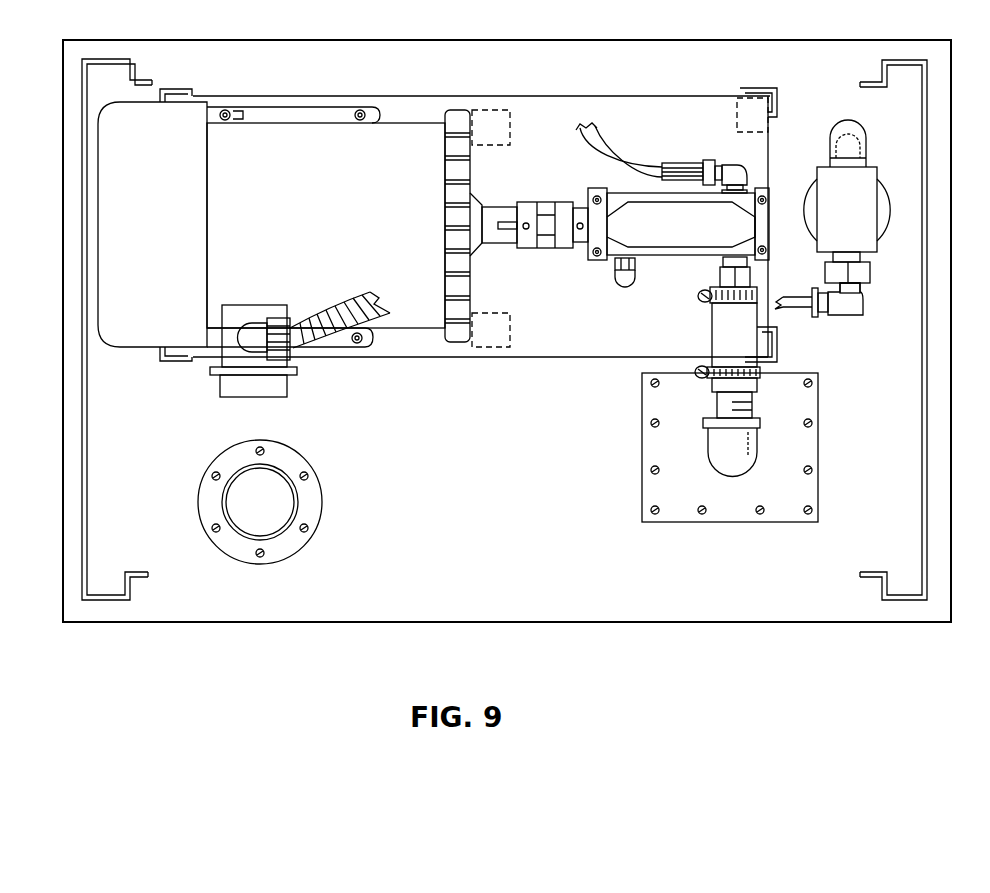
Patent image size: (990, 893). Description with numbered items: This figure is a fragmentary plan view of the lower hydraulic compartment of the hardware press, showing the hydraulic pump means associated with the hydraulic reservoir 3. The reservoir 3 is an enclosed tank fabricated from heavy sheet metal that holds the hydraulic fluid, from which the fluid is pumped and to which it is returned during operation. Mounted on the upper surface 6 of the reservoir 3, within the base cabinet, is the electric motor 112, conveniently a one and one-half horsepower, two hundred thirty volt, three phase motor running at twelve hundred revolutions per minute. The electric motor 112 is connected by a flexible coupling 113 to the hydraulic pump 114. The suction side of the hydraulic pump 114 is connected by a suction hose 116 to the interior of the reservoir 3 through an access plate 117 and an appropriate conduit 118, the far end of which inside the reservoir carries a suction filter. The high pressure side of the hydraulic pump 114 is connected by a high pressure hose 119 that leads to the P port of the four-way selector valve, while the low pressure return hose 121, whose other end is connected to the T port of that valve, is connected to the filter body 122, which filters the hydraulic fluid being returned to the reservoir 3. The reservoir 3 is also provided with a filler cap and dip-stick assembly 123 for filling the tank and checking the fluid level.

The reservoir 3 is at (273, 603).
The upper surface 6 is at (477, 554).
The electric motor 112 is at (318, 235).
The flexible coupling 113 is at (543, 203).
The hydraulic pump 114 is at (675, 233).
The suction hose 116 is at (728, 327).
The access plate 117 is at (643, 422).
The conduit 118 is at (748, 402).
The high pressure hose 119 is at (642, 165).
The return hose 121 is at (792, 300).
The filter body 122 is at (863, 183).
The filler cap and dip-stick assembly 123 is at (272, 478).